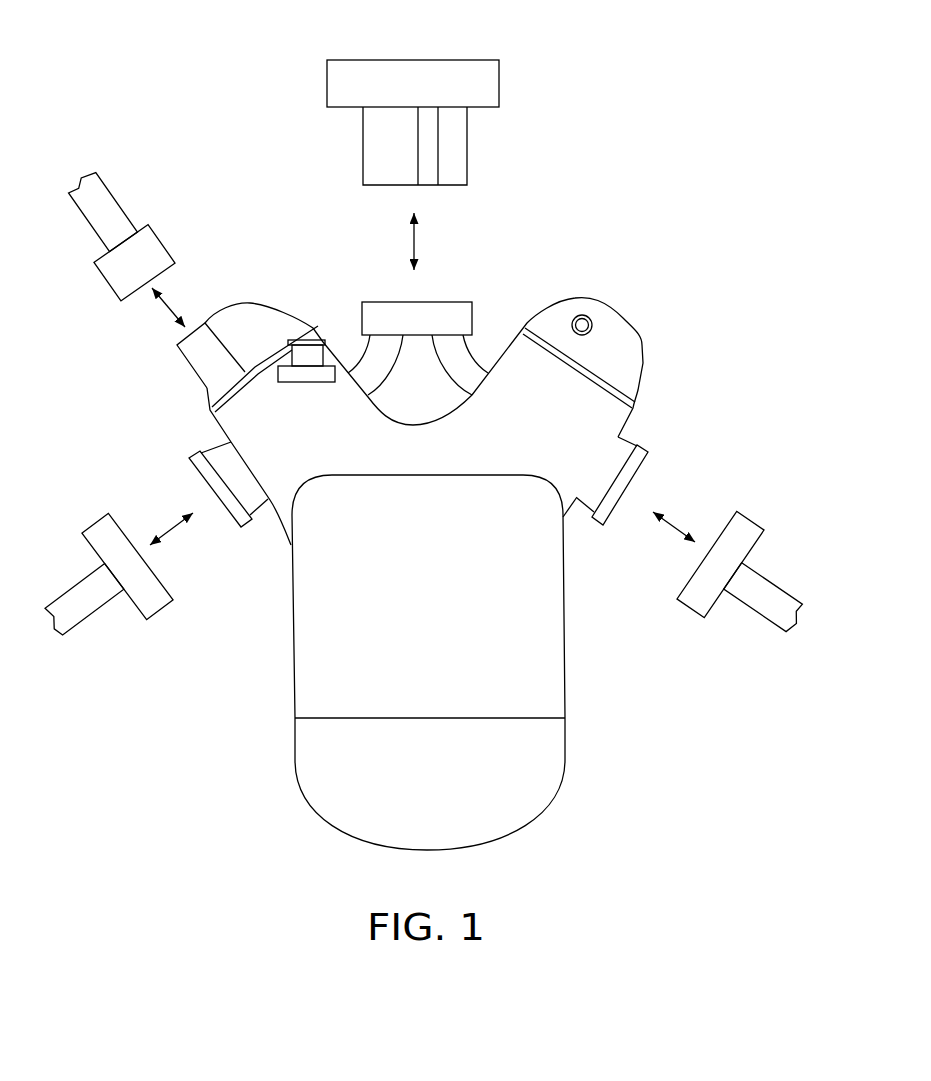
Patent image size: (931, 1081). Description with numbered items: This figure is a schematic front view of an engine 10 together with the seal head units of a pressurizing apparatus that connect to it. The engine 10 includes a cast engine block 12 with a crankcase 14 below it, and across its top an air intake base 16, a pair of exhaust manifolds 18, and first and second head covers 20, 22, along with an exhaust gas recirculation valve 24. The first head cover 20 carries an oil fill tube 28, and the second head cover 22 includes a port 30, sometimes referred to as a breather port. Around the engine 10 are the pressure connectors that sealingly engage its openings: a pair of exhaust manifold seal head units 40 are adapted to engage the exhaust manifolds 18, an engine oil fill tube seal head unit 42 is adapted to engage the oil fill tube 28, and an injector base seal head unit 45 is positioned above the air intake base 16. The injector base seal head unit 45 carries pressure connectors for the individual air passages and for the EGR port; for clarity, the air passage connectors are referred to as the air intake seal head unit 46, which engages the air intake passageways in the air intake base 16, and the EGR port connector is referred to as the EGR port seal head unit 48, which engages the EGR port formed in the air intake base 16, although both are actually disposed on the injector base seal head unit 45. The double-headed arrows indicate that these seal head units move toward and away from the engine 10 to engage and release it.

The engine 10 is at (245, 765).
The cast engine block 12 is at (557, 665).
The crankcase 14 is at (557, 793).
The air intake base 16 is at (472, 317).
The exhaust manifolds 18 is at (248, 528).
The first head cover 20 is at (205, 390).
The second head cover 22 is at (636, 395).
The exhaust gas recirculation (EGR) valve 24 is at (305, 383).
The oil fill tube 28 is at (178, 345).
The port 30 is at (592, 323).
The exhaust manifold seal head units 40 is at (90, 523).
The engine oil fill tube seal head unit 42 is at (163, 240).
The injector base seal head unit 45 is at (512, 62).
The air intake seal head unit 46 is at (362, 147).
The EGR port seal head unit 48 is at (438, 168).